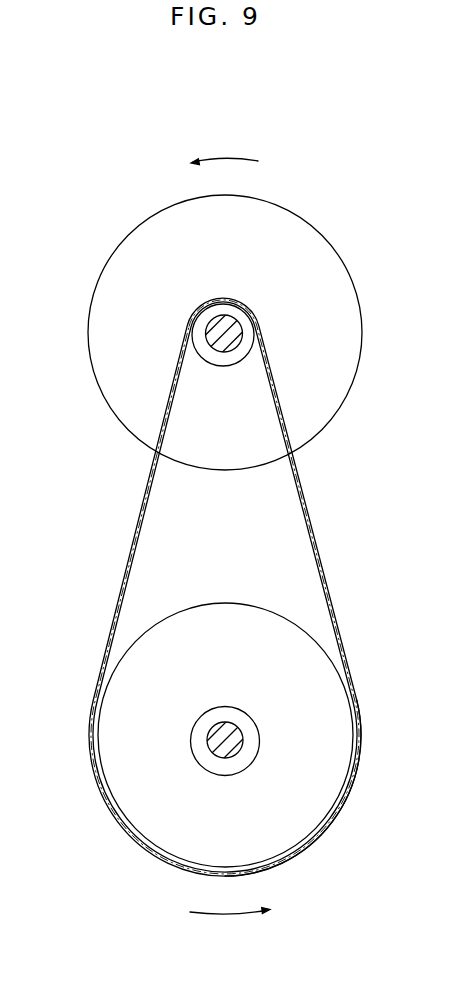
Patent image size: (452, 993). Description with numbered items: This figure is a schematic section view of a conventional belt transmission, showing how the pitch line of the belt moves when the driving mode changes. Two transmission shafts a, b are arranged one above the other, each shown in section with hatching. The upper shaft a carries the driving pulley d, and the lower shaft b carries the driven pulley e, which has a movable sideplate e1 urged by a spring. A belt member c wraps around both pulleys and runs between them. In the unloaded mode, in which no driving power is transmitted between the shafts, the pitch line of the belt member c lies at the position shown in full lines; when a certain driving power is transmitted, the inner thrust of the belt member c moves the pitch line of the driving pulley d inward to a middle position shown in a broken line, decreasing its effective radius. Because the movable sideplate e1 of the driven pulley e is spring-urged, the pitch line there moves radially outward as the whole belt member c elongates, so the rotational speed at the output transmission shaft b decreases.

The transmission shaft a is at (242, 343).
The transmission shaft b is at (243, 748).
The belt member c is at (336, 645).
The driving pulley d is at (108, 260).
The driven pulley e is at (116, 822).
The movable sideplate e1 is at (307, 853).